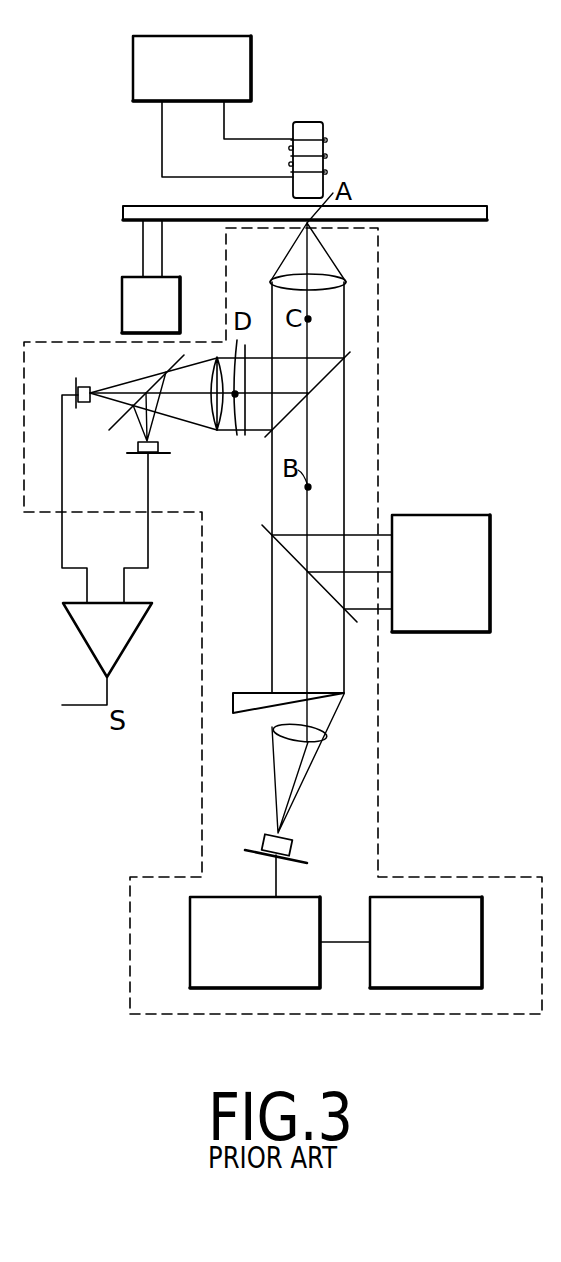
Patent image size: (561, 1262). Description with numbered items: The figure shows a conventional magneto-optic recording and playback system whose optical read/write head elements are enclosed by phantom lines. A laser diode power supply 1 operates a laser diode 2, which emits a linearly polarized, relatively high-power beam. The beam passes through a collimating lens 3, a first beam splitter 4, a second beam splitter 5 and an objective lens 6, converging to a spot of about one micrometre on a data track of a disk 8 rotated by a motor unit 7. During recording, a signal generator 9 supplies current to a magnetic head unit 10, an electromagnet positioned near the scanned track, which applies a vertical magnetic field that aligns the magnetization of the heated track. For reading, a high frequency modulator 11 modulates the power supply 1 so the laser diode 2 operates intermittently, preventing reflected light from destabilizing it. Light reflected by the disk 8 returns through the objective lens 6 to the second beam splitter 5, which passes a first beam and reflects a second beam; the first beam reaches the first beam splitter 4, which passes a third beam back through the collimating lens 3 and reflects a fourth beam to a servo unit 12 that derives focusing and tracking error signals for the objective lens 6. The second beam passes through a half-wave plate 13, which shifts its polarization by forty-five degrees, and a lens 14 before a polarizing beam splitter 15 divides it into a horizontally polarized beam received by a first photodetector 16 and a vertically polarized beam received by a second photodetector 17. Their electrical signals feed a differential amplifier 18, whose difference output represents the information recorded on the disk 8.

The laser diode power supply 1 is at (190, 925).
The laser diode 2 is at (292, 849).
The collimating lens 3 is at (300, 757).
The first beam splitter 4 is at (299, 563).
The second beam splitter 5 is at (319, 383).
The objective lens 6 is at (338, 276).
The motor unit 7 is at (122, 290).
The disk 8 is at (423, 205).
The signal generator 9 is at (133, 53).
The magnetic head unit 10 is at (323, 127).
The high frequency modulator 11 is at (370, 916).
The servo unit 12 is at (453, 514).
The half-wave plate 13 is at (245, 436).
The lens 14 is at (215, 432).
The polarizing beam splitter 15 is at (178, 360).
The first photodetector 16 is at (92, 375).
The second photodetector 17 is at (138, 447).
The differential amplifier 18 is at (130, 643).